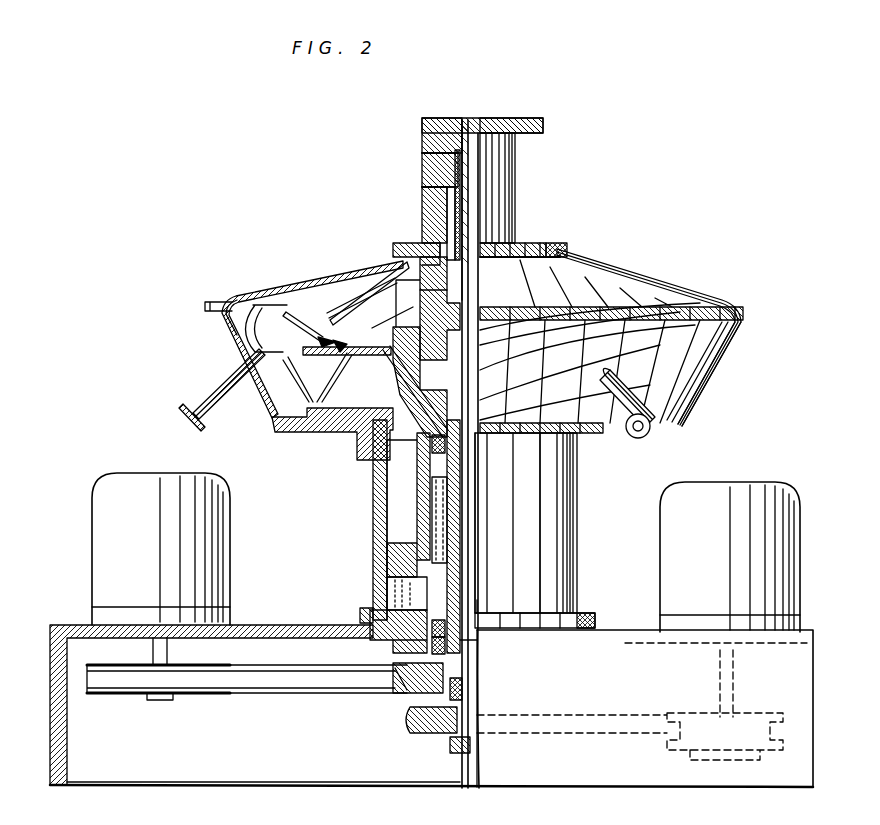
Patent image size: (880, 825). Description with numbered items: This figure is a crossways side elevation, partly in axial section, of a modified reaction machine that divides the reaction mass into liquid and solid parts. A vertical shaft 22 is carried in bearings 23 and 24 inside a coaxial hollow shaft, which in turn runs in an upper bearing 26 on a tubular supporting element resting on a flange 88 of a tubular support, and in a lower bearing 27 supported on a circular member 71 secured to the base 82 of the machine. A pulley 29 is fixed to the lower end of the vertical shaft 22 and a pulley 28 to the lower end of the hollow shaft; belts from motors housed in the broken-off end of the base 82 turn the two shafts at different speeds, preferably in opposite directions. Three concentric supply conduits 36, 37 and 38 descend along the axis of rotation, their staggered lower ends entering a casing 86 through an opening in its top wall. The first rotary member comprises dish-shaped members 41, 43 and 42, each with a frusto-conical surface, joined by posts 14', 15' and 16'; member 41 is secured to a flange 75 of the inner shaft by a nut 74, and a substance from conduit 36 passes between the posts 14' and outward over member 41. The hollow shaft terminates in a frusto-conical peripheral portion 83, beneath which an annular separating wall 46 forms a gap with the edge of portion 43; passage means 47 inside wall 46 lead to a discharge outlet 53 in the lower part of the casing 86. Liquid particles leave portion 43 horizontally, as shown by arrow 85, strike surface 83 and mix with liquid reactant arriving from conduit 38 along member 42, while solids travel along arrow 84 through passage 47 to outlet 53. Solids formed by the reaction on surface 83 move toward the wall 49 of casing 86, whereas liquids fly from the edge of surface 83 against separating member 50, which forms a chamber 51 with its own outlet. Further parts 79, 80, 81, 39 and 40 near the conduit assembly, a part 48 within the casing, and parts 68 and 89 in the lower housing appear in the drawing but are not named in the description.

The top flange 79 is at (516, 118).
The cap 80 is at (435, 146).
The cap insert 81 is at (429, 178).
The supply conduit 36 is at (490, 160).
The supply conduit 37 is at (466, 184).
The supply conduit 38 is at (451, 213).
The sleeve 39 is at (452, 236).
The post 15' is at (529, 237).
The flange 40 is at (549, 250).
The dish-shaped member 41 is at (562, 258).
The post 14' is at (610, 337).
The nut 74 is at (612, 300).
The flange 75 is at (710, 356).
The post 16' is at (410, 231).
The arrow 85 is at (340, 342).
The dish-shaped member 42 is at (378, 292).
The casing 86 is at (270, 300).
The frusto-conical peripheral portion 83 is at (298, 318).
The annular separating wall 46 is at (322, 338).
The dish-shaped member 43 is at (343, 322).
The separating member 50 is at (240, 297).
The wall 49 is at (226, 296).
The chamber 51 is at (208, 309).
The arrow 84 is at (352, 356).
The link 48 is at (302, 360).
The passage means 47 is at (327, 404).
The discharge outlet 53 is at (280, 422).
The bearing 23 is at (478, 436).
The vertical shaft 22 is at (520, 484).
The bearing 27 is at (474, 614).
The bearing 24 is at (580, 628).
The upper bearing 26 is at (436, 447).
The sleeve 89 is at (442, 470).
The block 68 is at (432, 485).
The flange 88 is at (402, 566).
The circular member 71 is at (395, 647).
The pulley 28 is at (405, 688).
The pulley 29 is at (422, 735).
The base 82 is at (556, 762).